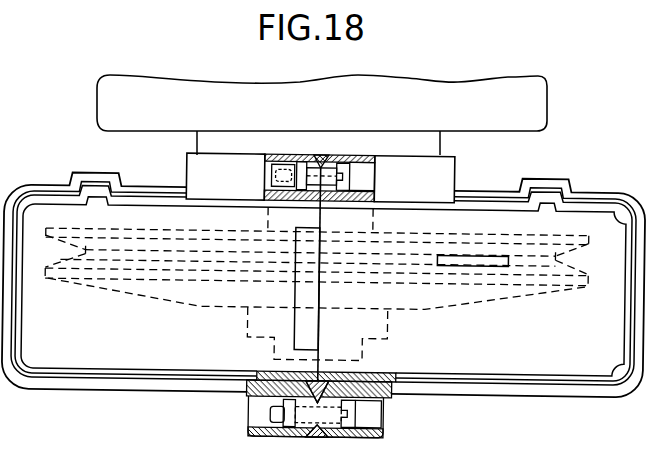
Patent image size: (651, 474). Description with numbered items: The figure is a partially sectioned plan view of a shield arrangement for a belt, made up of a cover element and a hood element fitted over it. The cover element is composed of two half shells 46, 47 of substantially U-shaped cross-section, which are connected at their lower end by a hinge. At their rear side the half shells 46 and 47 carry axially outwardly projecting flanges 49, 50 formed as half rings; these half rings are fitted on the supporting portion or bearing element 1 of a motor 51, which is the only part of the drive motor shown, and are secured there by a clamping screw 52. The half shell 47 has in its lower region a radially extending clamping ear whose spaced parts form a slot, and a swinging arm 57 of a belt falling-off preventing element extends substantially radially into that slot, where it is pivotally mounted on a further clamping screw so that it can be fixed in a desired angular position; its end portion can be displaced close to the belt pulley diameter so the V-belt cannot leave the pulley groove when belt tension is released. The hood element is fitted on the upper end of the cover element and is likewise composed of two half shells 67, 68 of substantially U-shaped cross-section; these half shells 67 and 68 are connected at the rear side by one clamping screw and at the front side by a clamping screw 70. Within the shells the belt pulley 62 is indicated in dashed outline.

The bearing element 1 is at (207, 141).
The half shell 46 is at (93, 372).
The half shell 47 is at (450, 378).
The flange 49 is at (198, 171).
The flange 50 is at (438, 173).
The motor 51 is at (532, 105).
The clamping screw 52 is at (345, 186).
The swinging arm 57 is at (497, 259).
The rotor disc 62 is at (200, 296).
The half shell 67 is at (155, 390).
The half shell 68 is at (498, 392).
The clamping screw 70 is at (383, 418).